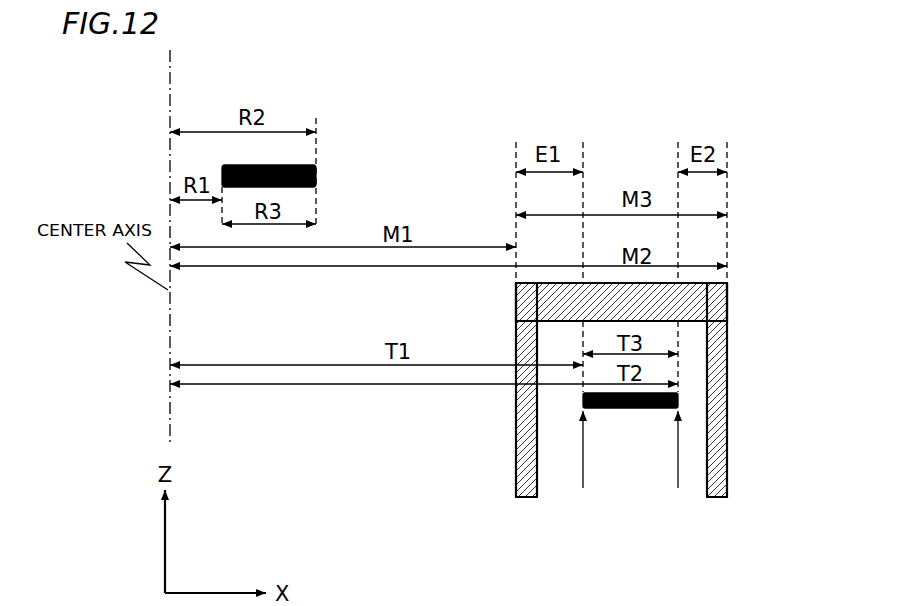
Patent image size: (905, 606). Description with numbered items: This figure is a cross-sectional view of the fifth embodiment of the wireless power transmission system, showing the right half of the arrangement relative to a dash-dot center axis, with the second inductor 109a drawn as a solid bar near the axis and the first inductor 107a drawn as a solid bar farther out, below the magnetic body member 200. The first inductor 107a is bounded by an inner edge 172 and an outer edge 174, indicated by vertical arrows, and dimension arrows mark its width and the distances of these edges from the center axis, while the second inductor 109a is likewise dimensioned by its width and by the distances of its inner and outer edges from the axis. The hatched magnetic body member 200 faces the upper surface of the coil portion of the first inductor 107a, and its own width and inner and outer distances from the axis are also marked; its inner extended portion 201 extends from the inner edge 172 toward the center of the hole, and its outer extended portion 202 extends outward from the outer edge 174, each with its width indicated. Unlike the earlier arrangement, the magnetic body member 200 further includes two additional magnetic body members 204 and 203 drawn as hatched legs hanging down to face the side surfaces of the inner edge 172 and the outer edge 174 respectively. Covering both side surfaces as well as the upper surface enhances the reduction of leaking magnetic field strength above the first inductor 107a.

The second inductor 109a is at (317, 172).
The first inductor 107a is at (680, 400).
The magnetic body member 200 is at (634, 379).
The inner extended portion 201 is at (515, 312).
The outer extended portion 202 is at (728, 293).
The additional magnetic body member 203 is at (728, 468).
The additional magnetic body member 204 is at (515, 424).
The inner edge 172 is at (583, 463).
The outer edge 174 is at (678, 463).